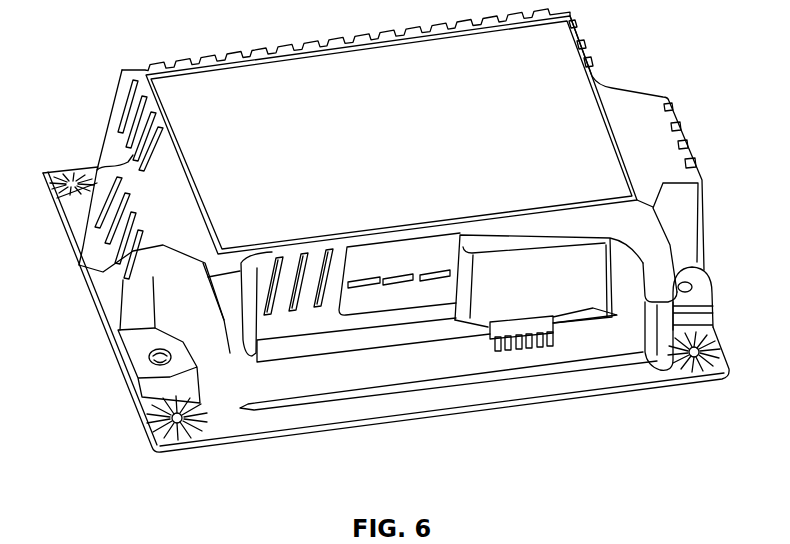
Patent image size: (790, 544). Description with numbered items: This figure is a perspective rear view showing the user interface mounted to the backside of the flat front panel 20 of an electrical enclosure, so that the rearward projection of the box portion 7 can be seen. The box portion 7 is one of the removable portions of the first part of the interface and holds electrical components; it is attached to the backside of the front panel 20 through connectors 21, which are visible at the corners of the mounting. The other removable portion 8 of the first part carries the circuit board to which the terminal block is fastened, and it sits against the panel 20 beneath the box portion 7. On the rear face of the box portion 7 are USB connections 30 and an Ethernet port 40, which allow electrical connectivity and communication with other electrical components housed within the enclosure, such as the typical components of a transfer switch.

The box portion 7 is at (113, 241).
The portion 8 is at (255, 425).
The front panel 20 is at (105, 336).
The connectors 21 is at (67, 173).
The USB connections 30 is at (363, 292).
The Ethernet port 40 is at (400, 292).